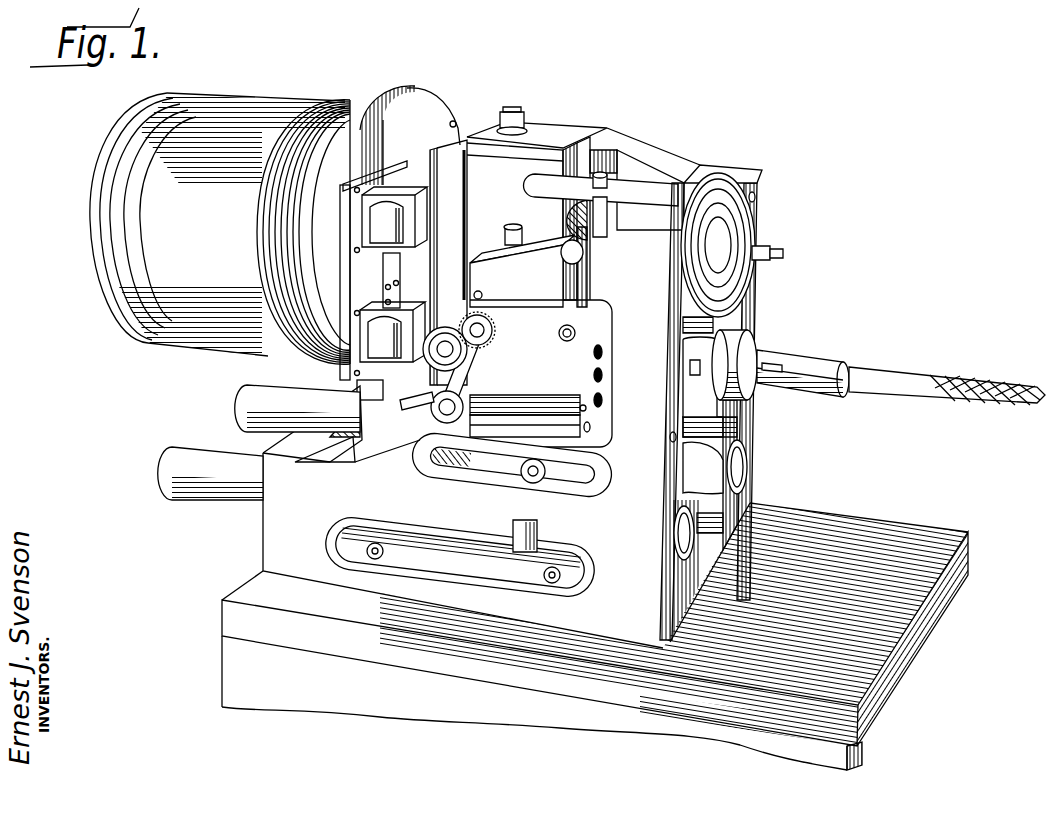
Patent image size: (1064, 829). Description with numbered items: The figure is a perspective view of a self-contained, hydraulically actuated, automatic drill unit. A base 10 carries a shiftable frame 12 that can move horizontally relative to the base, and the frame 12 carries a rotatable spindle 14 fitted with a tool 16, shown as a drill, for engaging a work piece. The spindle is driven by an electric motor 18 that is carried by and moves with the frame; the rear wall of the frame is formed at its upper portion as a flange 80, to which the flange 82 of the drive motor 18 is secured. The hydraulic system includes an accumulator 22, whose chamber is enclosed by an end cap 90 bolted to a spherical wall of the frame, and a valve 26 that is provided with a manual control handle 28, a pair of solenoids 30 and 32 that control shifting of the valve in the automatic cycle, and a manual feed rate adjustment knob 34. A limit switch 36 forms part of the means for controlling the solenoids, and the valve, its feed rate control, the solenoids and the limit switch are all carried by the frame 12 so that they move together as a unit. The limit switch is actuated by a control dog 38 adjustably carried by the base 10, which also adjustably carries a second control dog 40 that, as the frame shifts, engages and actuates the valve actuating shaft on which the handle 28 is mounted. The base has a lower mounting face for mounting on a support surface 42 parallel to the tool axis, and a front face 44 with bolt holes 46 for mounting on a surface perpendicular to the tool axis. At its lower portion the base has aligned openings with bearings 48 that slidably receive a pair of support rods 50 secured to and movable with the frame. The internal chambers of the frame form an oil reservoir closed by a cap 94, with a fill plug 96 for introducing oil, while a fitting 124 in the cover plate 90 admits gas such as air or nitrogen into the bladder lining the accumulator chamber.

The base 10 is at (638, 610).
The shiftable frame 12 is at (607, 165).
The rotatable spindle 14 is at (798, 365).
The tool 16 is at (940, 377).
The electric motor 18 is at (298, 81).
The accumulator 22 is at (670, 177).
The valve 26 is at (563, 353).
The manual control handle 28 is at (497, 337).
The solenoid 30 is at (373, 217).
The solenoid 32 is at (373, 347).
The manual feed rate adjustment knob 34 is at (457, 317).
The limit switch 36 is at (500, 260).
The control dog 38 is at (600, 230).
The control dog 40 is at (547, 443).
The support surface 42 is at (823, 520).
The front face 44 is at (743, 500).
The bolt holes 46 is at (755, 197).
The bearings 48 is at (680, 563).
The support rods 50 is at (247, 417).
The flange 80 is at (440, 107).
The flange 82 is at (378, 90).
The end cap 90 is at (733, 280).
The cap 94 is at (570, 128).
The fill plug 96 is at (525, 125).
The fitting 124 is at (770, 248).